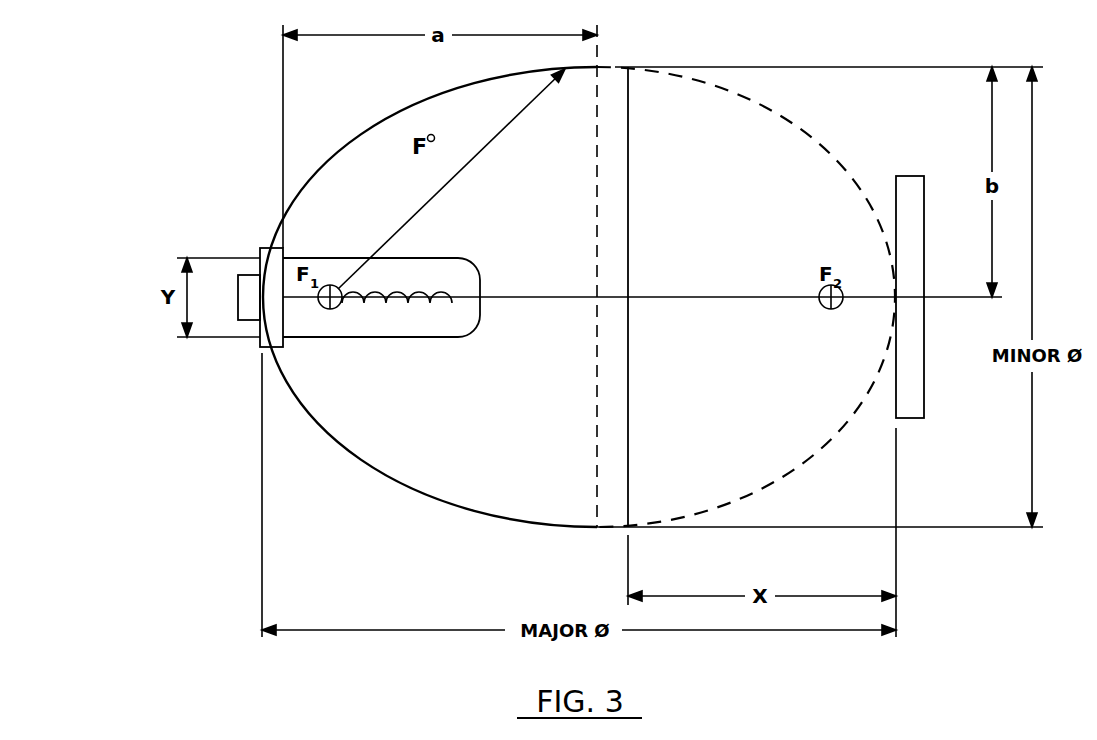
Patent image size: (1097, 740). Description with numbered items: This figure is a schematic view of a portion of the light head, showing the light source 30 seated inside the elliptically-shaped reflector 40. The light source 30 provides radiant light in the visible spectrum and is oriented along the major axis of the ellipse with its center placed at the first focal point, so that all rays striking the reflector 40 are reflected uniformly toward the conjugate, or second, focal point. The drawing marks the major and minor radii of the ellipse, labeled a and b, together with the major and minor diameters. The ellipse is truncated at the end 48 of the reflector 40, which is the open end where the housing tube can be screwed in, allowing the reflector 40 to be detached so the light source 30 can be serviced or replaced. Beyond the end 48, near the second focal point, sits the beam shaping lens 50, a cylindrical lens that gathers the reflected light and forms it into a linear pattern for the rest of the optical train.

The light source 30 is at (358, 337).
The reflector 40 is at (392, 482).
The end of the ellipse reflector 48 is at (628, 478).
The beam shaping lens 50 is at (912, 176).